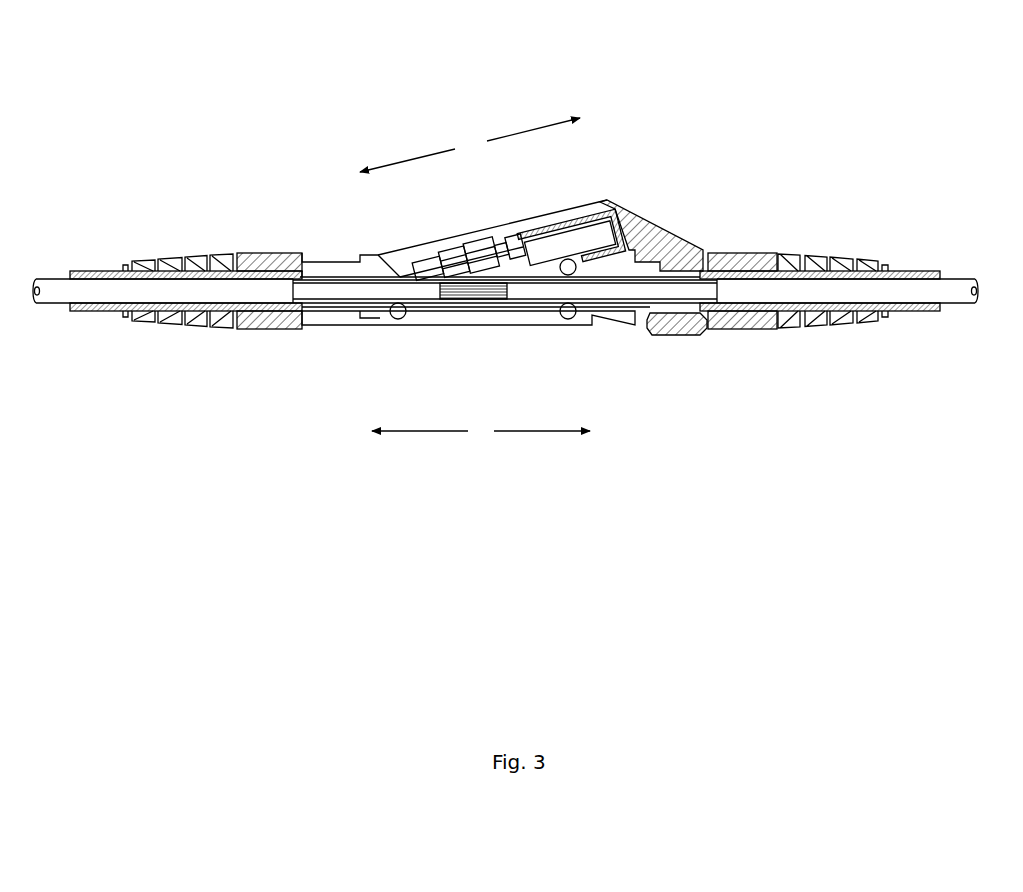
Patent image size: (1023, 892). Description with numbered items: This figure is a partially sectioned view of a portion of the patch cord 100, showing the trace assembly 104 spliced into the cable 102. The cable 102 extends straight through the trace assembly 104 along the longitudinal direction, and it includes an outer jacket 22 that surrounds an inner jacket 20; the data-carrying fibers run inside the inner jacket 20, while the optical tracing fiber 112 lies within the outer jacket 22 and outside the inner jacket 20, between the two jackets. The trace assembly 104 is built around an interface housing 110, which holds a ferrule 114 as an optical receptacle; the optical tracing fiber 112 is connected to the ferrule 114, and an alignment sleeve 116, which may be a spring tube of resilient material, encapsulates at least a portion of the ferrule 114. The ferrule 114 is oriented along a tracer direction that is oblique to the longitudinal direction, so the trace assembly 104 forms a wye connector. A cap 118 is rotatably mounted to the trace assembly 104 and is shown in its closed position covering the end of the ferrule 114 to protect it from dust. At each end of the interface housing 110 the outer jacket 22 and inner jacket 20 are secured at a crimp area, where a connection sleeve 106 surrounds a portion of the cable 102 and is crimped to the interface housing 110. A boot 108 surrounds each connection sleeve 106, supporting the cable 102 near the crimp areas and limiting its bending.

The patch cord 100 is at (127, 90).
The trace assembly 104 is at (335, 145).
The cable 102 is at (95, 288).
The connection sleeve 106 is at (103, 310).
The boot 108 is at (222, 260).
The outer jacket 22 is at (233, 290).
The inner jacket 20 is at (342, 290).
The interface housing 110 is at (492, 317).
The optical tracing fiber 112 is at (400, 273).
The ferrule 114 is at (510, 248).
The alignment sleeve 116 is at (568, 223).
The cap 118 is at (632, 222).